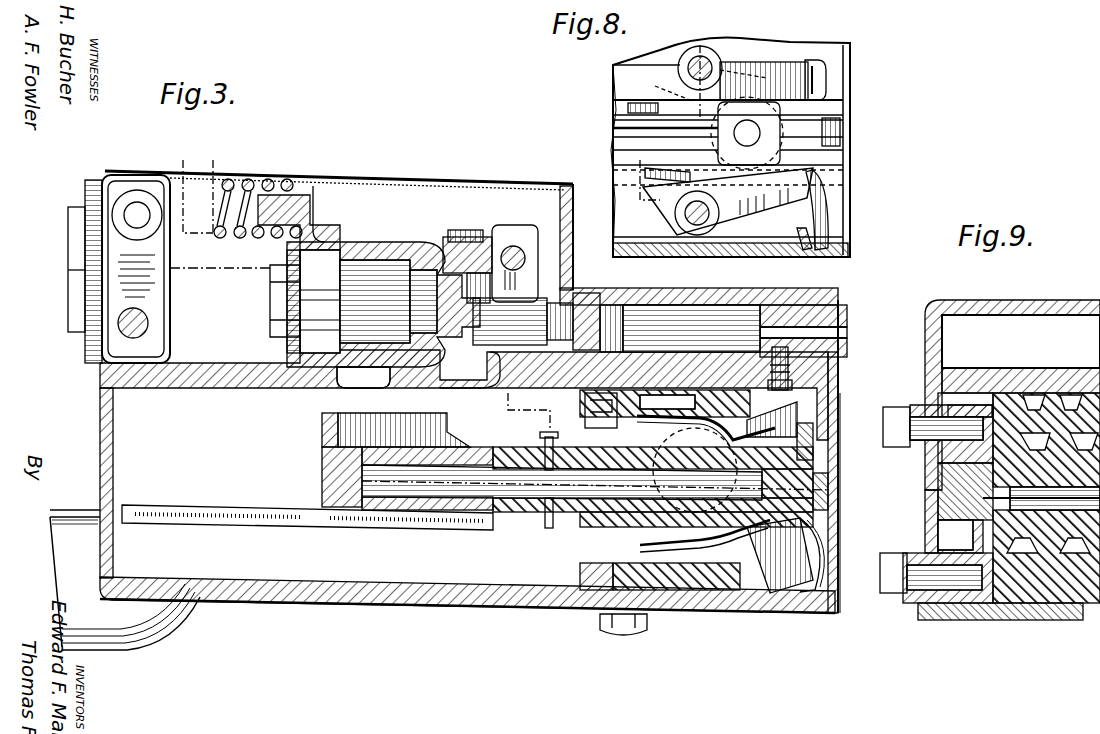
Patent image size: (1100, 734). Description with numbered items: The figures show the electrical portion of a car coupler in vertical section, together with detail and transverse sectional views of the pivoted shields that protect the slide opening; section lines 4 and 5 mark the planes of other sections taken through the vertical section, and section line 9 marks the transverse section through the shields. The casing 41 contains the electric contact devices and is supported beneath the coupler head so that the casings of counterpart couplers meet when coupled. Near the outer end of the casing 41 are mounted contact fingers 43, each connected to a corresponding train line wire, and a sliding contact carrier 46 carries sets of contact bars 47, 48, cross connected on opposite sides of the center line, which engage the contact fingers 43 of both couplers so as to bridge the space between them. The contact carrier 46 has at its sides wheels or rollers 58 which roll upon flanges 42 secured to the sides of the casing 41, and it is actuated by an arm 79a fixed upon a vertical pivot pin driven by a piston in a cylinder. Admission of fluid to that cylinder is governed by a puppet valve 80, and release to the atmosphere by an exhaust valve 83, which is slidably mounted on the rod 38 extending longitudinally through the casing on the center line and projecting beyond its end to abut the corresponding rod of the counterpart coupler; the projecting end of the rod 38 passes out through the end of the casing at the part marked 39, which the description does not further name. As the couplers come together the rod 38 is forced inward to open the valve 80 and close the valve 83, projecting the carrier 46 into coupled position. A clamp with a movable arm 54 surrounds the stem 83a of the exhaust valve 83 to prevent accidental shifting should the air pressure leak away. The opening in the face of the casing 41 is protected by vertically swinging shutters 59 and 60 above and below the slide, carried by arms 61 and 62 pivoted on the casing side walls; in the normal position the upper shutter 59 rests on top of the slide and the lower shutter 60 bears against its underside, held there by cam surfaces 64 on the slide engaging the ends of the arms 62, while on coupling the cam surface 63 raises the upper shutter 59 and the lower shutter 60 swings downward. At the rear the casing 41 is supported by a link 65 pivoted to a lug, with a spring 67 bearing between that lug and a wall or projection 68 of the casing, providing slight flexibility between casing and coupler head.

In FIG. 3, the section line 4— 4 is at (80, 290).
In FIG. 3, the section line 5— 5 is at (518, 176).
In FIG. 8, the section line 9— 9 is at (702, 5).
In FIG. 3, the rod 38 is at (856, 286).
In FIG. 3, the bushing 39 is at (848, 330).
In FIG. 9, the bushing 39 is at (882, 360).
In FIG. 3, the casing 41 is at (100, 437).
In FIG. 9, the casing 41 is at (928, 355).
In FIG. 3, the flanges 42 is at (320, 520).
In FIG. 8, the flanges 42 is at (843, 176).
In FIG. 9, the flanges 42 is at (940, 532).
In FIG. 3, the contact fingers 43 is at (740, 430).
In FIG. 9, the contact fingers 43 is at (1010, 603).
In FIG. 3, the sliding contact carrier 46 is at (490, 510).
In FIG. 8, the sliding contact carrier 46 is at (840, 135).
In FIG. 9, the sliding contact carrier 46 is at (1020, 390).
In FIG. 3, the contact bars 47 is at (545, 440).
In FIG. 9, the contact bars 47 is at (1055, 390).
In FIG. 3, the contact bars 48 is at (775, 440).
In FIG. 3, the movable arm 54 is at (522, 235).
In FIG. 3, the wheels or rollers 58 is at (460, 510).
In FIG. 8, the wheels or rollers 58 is at (780, 118).
In FIG. 9, the wheels or rollers 58 is at (938, 462).
In FIG. 3, the upper shutter 59 is at (830, 443).
In FIG. 8, the upper shutter 59 is at (826, 83).
In FIG. 9, the upper shutter 59 is at (883, 432).
In FIG. 3, the lower shutter 60 is at (818, 556).
In FIG. 8, the lower shutter 60 is at (828, 200).
In FIG. 9, the lower shutter 60 is at (903, 558).
In FIG. 3, the arms 61 is at (805, 428).
In FIG. 8, the arms 61 is at (770, 62).
In FIG. 9, the arms 61 is at (945, 405).
In FIG. 3, the arms 62 is at (800, 600).
In FIG. 8, the arms 62 is at (778, 205).
In FIG. 9, the arms 62 is at (920, 603).
In FIG. 8, the cam surface 63 is at (706, 81).
In FIG. 8, the cam surfaces 64 is at (655, 195).
In FIG. 9, the cam surfaces 64 is at (945, 505).
In FIG. 3, the link 65 is at (110, 320).
In FIG. 3, the spring 67 is at (225, 236).
In FIG. 3, the wall or projection 68 is at (318, 190).
In FIG. 3, the arm 79a is at (362, 405).
In FIG. 3, the puppet valve 80 is at (340, 248).
In FIG. 3, the exhaust valve 83 is at (470, 360).
In FIG. 3, the stem 83a is at (580, 290).